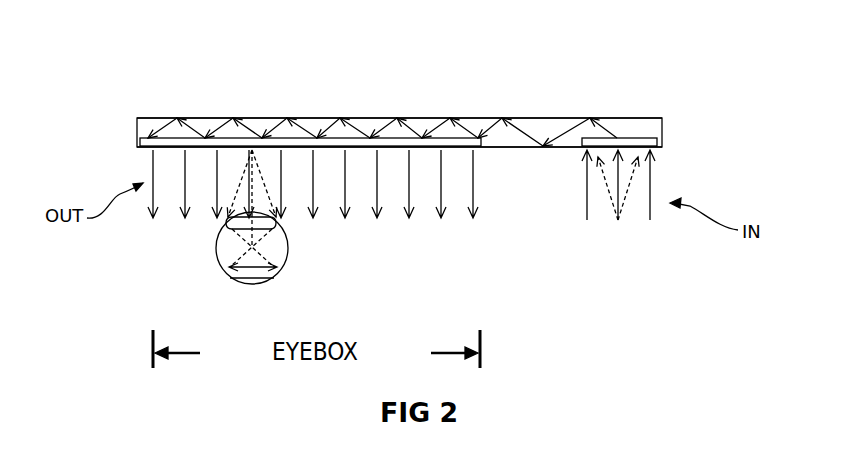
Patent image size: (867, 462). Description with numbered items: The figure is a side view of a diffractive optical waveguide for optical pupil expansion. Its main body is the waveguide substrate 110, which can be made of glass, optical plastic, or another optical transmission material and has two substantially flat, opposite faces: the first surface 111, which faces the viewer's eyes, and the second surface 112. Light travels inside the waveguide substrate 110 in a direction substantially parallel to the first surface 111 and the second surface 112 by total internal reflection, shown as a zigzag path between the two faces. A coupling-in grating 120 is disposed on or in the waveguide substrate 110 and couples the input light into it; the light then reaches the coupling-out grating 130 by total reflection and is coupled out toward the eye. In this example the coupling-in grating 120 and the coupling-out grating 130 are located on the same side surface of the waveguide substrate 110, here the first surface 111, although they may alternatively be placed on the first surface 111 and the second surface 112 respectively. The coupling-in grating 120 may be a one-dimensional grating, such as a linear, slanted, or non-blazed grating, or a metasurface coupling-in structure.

The waveguide substrate 110 is at (663, 126).
The first surface 111 is at (521, 147).
The second surface 112 is at (547, 117).
The coupling-in grating 120 is at (657, 143).
The coupling-out grating 130 is at (142, 140).